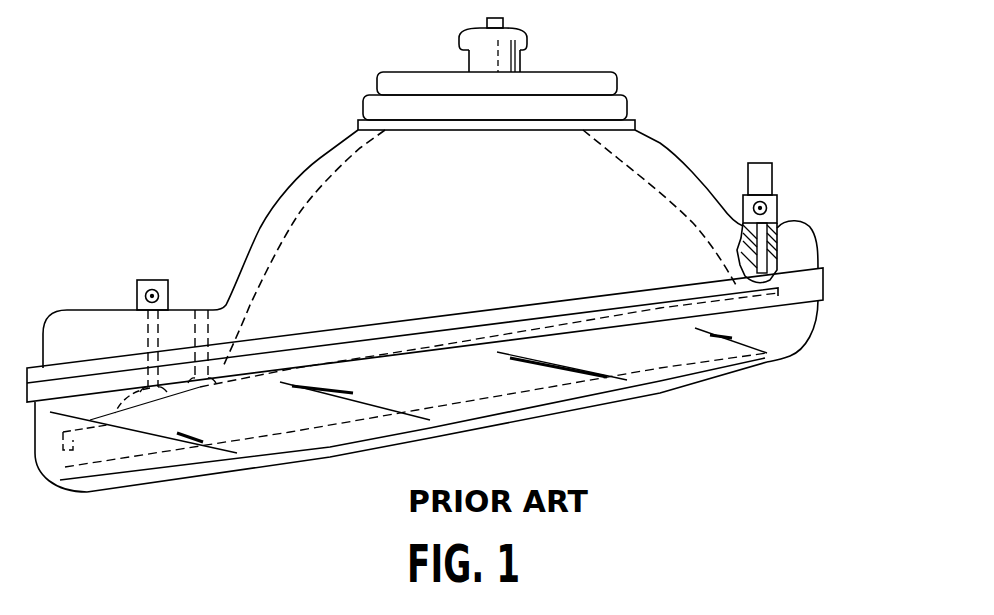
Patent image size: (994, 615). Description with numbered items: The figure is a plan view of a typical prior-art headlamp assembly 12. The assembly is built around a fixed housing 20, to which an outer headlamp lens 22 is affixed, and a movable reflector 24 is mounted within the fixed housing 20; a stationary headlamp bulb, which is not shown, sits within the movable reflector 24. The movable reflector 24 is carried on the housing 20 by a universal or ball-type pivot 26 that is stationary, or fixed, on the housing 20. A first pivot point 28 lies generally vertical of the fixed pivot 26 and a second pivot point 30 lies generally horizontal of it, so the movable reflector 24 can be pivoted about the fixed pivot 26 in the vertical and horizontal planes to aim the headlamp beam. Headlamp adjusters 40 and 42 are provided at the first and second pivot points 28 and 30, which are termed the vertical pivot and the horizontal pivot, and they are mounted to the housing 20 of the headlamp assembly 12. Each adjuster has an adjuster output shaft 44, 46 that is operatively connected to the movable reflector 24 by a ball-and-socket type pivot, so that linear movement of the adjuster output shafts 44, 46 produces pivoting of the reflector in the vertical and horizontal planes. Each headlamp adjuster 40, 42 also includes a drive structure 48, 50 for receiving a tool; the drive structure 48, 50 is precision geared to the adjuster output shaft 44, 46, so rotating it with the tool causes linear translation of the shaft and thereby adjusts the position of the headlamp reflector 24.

The headlamp assembly 12 is at (316, 85).
The fixed housing 20 is at (250, 247).
The outer headlamp lens 22 is at (663, 405).
The movable reflector 24 is at (310, 192).
The fixed pivot 26 is at (213, 307).
The first pivot point 28 is at (112, 420).
The second pivot point 30 is at (777, 259).
The headlamp adjuster 40 is at (145, 272).
The headlamp adjuster 42 is at (788, 205).
The adjuster output shaft 44 is at (148, 348).
The adjuster output shaft 46 is at (803, 223).
The drive structure 48 is at (148, 293).
The drive structure 50 is at (756, 208).